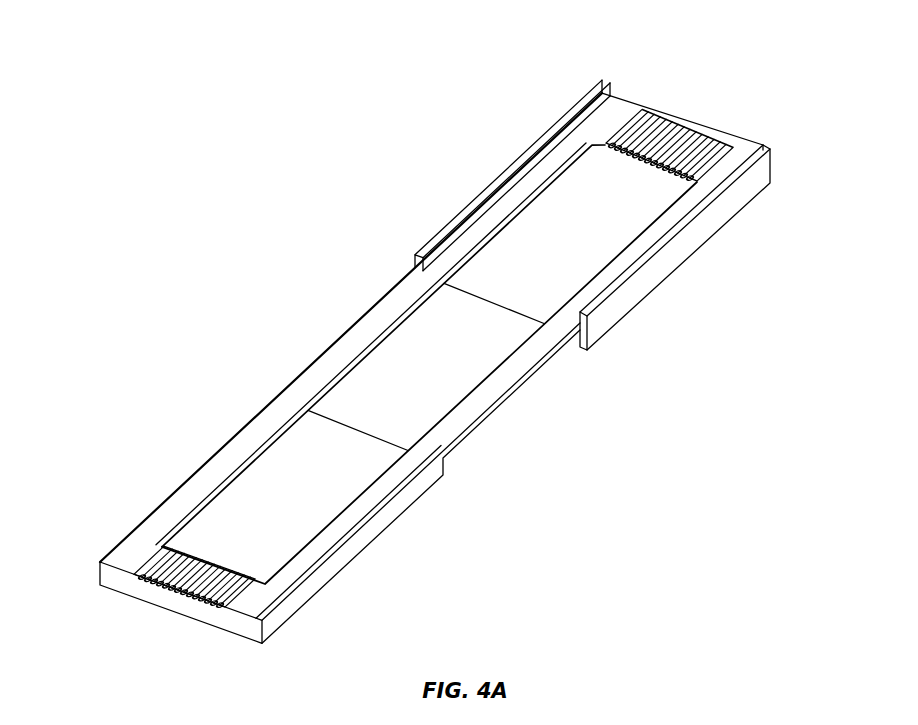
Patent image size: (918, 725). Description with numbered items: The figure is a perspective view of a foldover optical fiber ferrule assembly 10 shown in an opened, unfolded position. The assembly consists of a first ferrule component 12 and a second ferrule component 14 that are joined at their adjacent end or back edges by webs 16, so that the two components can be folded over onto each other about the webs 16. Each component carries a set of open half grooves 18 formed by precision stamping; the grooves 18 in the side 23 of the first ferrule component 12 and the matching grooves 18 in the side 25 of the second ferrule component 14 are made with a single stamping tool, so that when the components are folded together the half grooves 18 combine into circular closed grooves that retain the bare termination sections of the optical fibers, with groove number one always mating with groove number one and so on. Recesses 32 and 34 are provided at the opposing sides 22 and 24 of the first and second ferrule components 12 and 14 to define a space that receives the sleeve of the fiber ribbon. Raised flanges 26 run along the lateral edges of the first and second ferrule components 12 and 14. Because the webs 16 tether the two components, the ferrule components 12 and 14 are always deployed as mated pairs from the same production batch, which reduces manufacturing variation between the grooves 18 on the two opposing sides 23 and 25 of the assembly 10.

The foldover optical fiber ferrule assembly 10 is at (455, 339).
The first ferrule component 12 is at (330, 570).
The second ferrule component 14 is at (675, 258).
The webs 16 is at (365, 330).
The grooves 18 is at (700, 132).
The opposing side 22 is at (205, 490).
The side 23 is at (260, 599).
The opposing side 24 is at (508, 213).
The side 25 is at (728, 167).
The raised flanges 26 is at (600, 82).
The recess 32 is at (290, 473).
The recess 34 is at (613, 180).